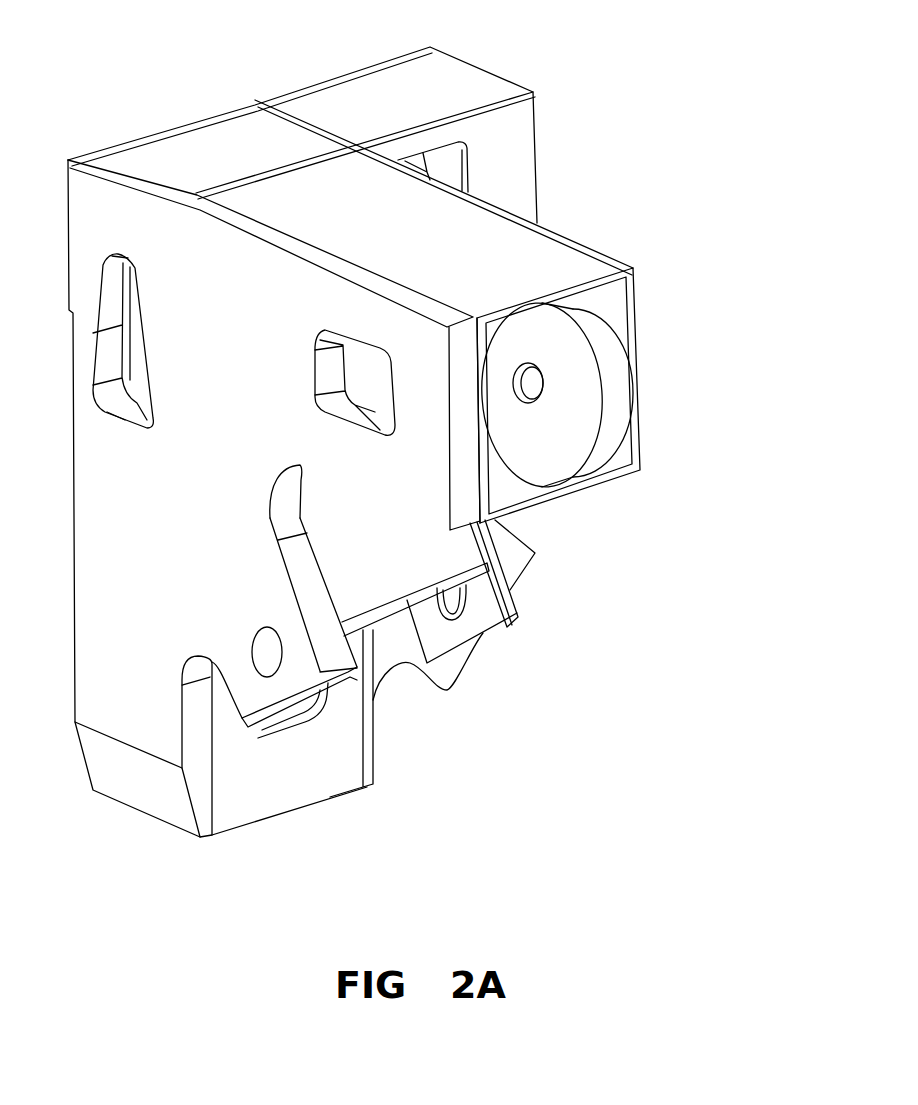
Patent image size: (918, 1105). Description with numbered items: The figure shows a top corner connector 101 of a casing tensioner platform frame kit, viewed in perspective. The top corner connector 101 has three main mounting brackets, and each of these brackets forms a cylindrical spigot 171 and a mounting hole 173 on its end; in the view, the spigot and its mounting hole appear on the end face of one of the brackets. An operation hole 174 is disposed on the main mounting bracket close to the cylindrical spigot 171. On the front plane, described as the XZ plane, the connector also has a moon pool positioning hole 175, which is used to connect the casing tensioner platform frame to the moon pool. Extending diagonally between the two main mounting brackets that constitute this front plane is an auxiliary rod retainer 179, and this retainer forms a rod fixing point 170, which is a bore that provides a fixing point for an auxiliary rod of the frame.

The top corner connector 101 is at (155, 117).
The rod fixing point 170 is at (285, 661).
The cylindrical spigot 171 is at (613, 390).
The mounting hole 173 is at (540, 393).
The operation hole 174 is at (395, 383).
The moon pool positioning hole 175 is at (110, 346).
The auxiliary rod retainer 179 is at (252, 678).